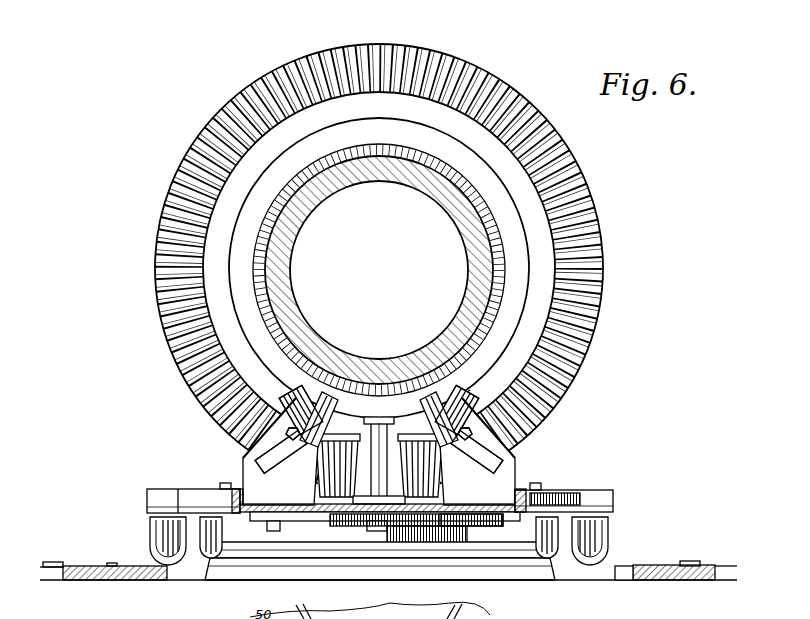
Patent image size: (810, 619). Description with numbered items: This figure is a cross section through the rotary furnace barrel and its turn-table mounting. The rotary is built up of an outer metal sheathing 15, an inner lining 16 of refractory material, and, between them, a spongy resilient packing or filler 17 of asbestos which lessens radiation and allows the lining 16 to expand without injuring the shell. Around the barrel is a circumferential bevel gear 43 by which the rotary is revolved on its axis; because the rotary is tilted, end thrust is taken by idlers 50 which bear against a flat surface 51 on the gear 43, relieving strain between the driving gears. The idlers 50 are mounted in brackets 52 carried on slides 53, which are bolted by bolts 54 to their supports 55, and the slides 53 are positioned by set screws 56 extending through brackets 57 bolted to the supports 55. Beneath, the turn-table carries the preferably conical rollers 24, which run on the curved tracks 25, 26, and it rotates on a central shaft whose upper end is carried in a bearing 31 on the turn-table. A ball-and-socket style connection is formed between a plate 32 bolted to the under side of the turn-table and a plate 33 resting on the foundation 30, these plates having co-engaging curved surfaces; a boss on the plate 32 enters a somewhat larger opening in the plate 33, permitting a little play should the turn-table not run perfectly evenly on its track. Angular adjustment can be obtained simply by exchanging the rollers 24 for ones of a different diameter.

The circumferential bevel gear 43 is at (386, 56).
The flat surface 51 is at (440, 113).
The outer metal sheathing 15 is at (450, 168).
The packing or filler 17 is at (466, 180).
The inner lining 16 is at (450, 193).
The brackets 52 is at (330, 420).
The bearing 31 is at (392, 420).
The slides 53 is at (462, 389).
The supports 55 is at (243, 472).
The idlers 50 is at (290, 410).
The bolts 54 is at (260, 462).
The set screws 56 is at (290, 440).
The brackets 57 is at (246, 455).
The plate 33 is at (457, 550).
The plate 32 is at (441, 524).
The conical rollers 24 is at (172, 545).
The foundation 30 is at (585, 582).
The curved track 26 is at (133, 567).
The curved track 25 is at (662, 567).